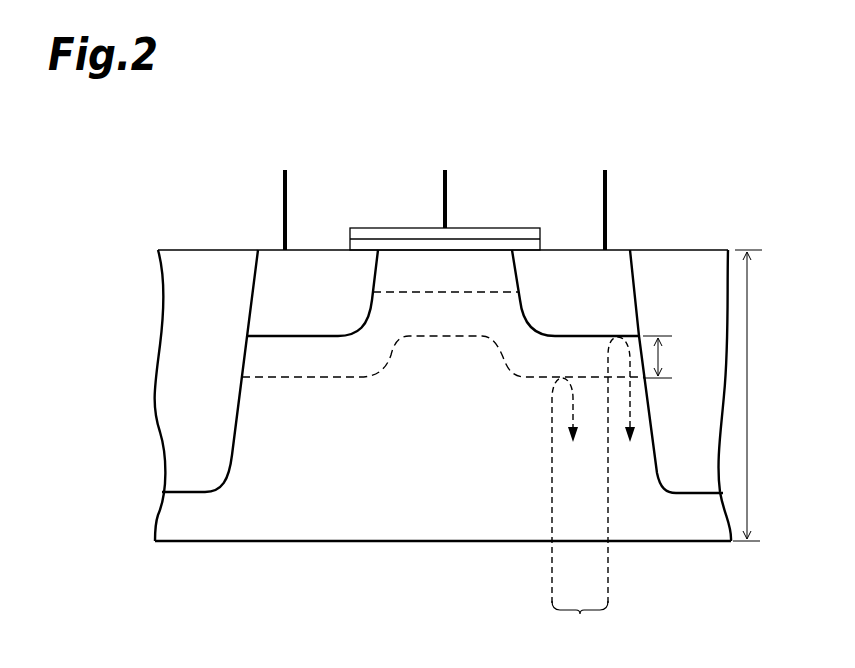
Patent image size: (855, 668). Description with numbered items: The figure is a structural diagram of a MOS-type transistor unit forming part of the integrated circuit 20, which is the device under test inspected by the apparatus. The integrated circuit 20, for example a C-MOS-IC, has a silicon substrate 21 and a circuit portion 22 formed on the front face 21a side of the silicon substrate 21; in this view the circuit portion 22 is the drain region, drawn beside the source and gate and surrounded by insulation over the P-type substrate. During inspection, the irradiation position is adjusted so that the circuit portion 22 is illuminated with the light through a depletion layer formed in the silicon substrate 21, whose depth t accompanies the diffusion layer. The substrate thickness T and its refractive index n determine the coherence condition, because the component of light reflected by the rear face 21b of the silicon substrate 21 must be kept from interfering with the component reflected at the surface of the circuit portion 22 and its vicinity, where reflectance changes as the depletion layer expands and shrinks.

The integrated circuit 20 is at (678, 150).
The silicon substrate 21 is at (310, 531).
The front face 21a is at (690, 250).
The rear face 21b is at (692, 541).
The circuit portion 22 is at (265, 246).